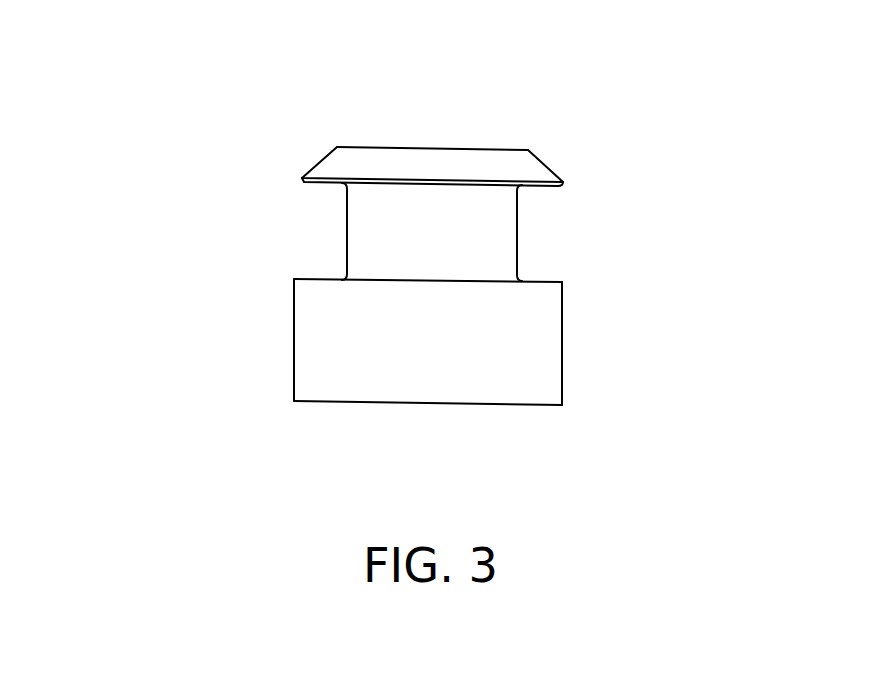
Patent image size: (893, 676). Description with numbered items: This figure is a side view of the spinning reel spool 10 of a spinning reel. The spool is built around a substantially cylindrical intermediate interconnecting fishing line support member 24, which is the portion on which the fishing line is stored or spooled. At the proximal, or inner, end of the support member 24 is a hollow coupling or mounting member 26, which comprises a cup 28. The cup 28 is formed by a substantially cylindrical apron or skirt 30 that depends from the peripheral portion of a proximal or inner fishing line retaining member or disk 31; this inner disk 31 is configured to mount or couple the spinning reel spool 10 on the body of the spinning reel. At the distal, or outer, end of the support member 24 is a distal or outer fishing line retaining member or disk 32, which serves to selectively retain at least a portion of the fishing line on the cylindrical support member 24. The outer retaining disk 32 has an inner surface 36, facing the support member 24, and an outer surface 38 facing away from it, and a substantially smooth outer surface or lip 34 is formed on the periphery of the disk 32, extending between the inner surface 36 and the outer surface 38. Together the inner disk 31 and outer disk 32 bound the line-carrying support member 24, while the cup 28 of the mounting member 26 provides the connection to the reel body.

The spinning reel spool 10 is at (208, 255).
The substantially cylindrical intermediate interconnecting fishing line support memb 24 is at (345, 217).
The proximal or inner hollowing coupling or mounting member 26 is at (623, 402).
The cup 28 is at (626, 339).
The substantially cylindrical apron or skirt 30 is at (293, 350).
The proximal or inner fishing line retaining member or disk 31 is at (542, 280).
The distal or outer fishing line retaining member or disk 32 is at (616, 132).
The substantially smooth outer surface or lip 34 is at (303, 178).
The inner surface 36 is at (553, 185).
The outer surface 38 is at (508, 147).